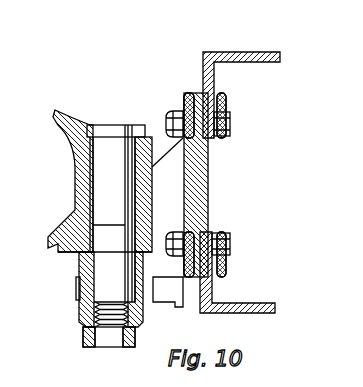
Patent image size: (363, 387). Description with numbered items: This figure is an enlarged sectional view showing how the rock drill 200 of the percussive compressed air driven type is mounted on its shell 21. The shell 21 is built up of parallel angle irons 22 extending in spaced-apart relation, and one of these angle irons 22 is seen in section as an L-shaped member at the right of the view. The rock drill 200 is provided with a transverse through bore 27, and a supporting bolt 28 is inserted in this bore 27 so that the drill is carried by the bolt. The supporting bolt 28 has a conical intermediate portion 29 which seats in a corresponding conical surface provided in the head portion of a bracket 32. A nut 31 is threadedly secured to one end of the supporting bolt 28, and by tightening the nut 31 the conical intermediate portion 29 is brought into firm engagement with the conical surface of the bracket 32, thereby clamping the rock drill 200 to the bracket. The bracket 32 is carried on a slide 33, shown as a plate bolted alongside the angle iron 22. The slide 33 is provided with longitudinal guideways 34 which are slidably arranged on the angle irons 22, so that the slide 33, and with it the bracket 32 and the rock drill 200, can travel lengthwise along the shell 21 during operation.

The rock drill 200 is at (80, 138).
The transverse through bore 27 is at (90, 180).
The supporting bolt 28 is at (102, 208).
The conical intermediate portion 29 is at (83, 286).
The bracket 32 is at (90, 307).
The nut 31 is at (87, 333).
The slide 33 is at (197, 190).
The shell 21 is at (240, 167).
The angle irons 22 is at (212, 63).
The longitudinal guideways 34 is at (210, 110).